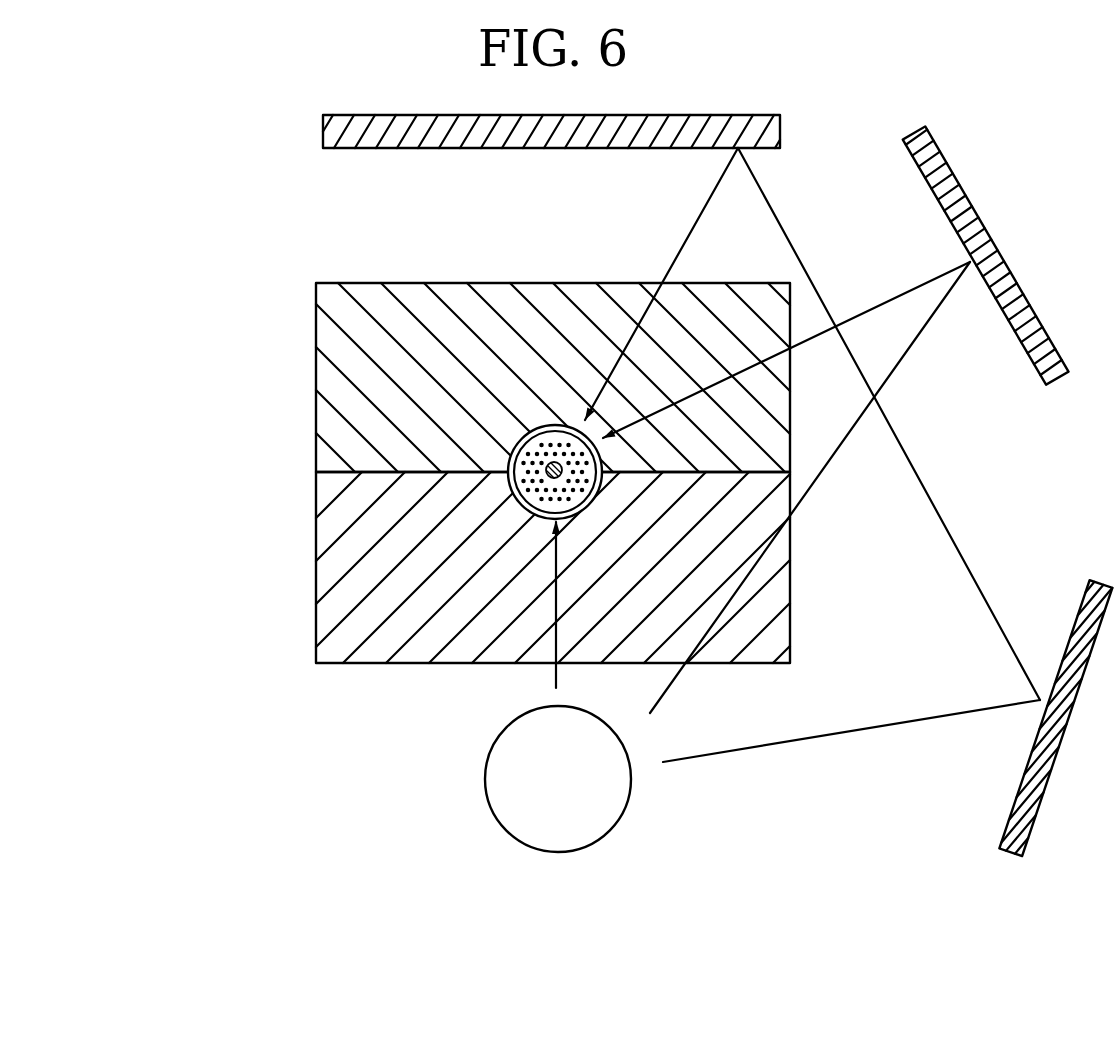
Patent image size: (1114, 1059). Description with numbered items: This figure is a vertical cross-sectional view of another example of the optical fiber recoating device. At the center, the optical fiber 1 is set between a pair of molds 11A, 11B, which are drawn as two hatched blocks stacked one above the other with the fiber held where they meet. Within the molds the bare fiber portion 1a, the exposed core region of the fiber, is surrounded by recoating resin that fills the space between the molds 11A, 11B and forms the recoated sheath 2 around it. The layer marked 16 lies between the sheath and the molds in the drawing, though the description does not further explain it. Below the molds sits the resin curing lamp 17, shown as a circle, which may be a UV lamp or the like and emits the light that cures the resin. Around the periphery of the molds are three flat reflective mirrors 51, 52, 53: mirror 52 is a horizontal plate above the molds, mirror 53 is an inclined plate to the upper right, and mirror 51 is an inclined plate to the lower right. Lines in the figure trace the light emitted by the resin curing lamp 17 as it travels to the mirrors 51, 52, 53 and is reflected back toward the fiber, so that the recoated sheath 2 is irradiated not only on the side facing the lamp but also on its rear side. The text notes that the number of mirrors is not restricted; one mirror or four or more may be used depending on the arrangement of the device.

The optical fiber 1 is at (505, 490).
The bare fiber portion 1a is at (555, 463).
The recoated sheath 2 is at (509, 455).
The mold 11A is at (317, 580).
The mold 11B is at (316, 392).
The adhesive layer 16 is at (507, 432).
The resin curing lamp 17 is at (488, 812).
The reflective mirror 51 is at (1075, 610).
The reflective mirror 52 is at (781, 125).
The reflective mirror 53 is at (1000, 318).